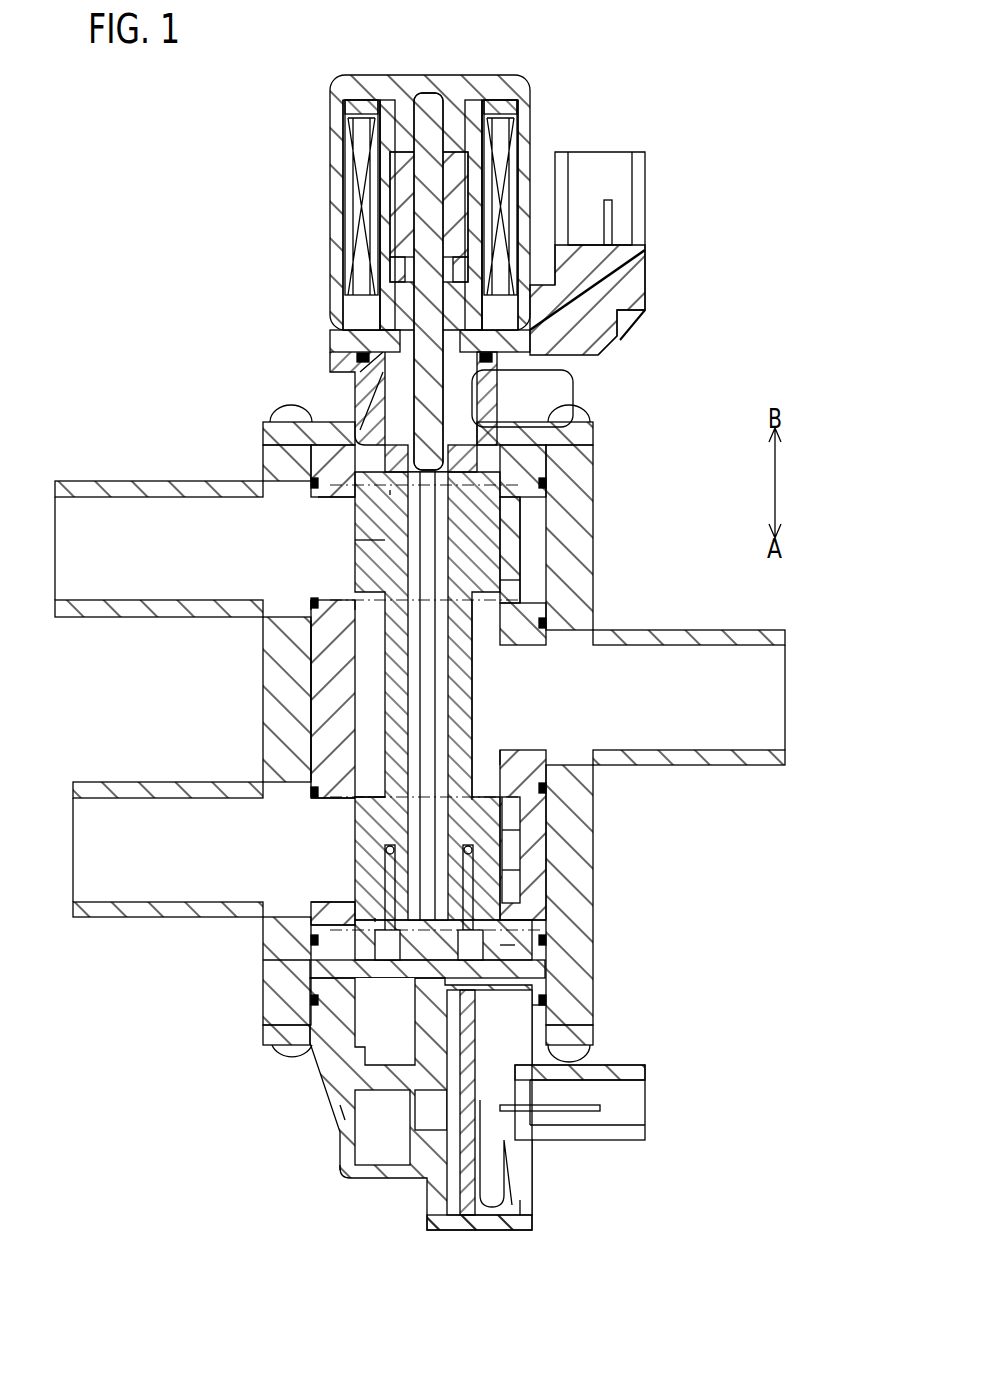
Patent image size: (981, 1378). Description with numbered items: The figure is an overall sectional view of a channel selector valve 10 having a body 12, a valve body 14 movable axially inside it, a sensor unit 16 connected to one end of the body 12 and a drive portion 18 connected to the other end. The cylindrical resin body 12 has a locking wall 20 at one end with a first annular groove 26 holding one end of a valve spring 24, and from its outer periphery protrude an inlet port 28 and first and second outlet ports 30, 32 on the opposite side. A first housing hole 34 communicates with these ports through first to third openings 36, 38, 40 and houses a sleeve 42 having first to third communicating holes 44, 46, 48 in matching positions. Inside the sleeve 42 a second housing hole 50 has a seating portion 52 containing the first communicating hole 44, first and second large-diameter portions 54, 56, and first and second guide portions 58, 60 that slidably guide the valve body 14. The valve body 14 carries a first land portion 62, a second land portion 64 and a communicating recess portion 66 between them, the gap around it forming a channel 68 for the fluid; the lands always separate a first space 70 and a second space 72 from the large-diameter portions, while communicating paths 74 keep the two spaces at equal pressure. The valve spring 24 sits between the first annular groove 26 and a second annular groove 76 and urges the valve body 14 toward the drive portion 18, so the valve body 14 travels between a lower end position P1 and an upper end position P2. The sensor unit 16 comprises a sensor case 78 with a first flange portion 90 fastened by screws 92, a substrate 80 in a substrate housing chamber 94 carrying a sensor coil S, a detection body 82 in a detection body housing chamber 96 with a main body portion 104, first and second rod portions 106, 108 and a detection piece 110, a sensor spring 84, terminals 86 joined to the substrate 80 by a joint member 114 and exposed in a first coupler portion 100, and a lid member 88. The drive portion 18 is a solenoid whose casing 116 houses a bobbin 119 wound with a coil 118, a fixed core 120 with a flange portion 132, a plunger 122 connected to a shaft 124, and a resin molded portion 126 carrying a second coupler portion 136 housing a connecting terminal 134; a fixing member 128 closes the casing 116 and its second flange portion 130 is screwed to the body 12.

The channel selector valve 10 is at (158, 145).
The body 12 is at (607, 493).
The valve body 14 is at (490, 695).
The sensor unit 16 is at (303, 1108).
The drive portion 18 is at (325, 195).
The locking wall 20 is at (365, 982).
The valve spring 24 is at (522, 830).
The first annular groove 26 is at (330, 960).
The inlet port 28 is at (745, 705).
The first outlet port 30 is at (105, 848).
The second outlet port 32 is at (90, 545).
The first housing hole 34 is at (525, 590).
The first opening 36 is at (545, 628).
The second opening 38 is at (315, 800).
The third opening 40 is at (310, 596).
The sleeve 42 is at (310, 685).
The first communicating hole 44 is at (520, 750).
The second communicating hole 46 is at (325, 900).
The third communicating hole 48 is at (318, 500).
The second housing hole 50 is at (365, 600).
The seating portion 52 is at (500, 752).
The first large-diameter portion 54 is at (522, 870).
The second large-diameter portion 56 is at (525, 515).
The first guide portion 58 is at (510, 920).
The second guide portion 60 is at (505, 470).
The first land portion 62 is at (385, 815).
The second land portion 64 is at (380, 540).
The communicating recess portion 66 is at (495, 625).
The channel 68 is at (520, 580).
The first space 70 is at (310, 925).
The second space 72 is at (355, 385).
The communicating paths 74 is at (440, 482).
The second annular groove 76 is at (385, 880).
The sensor case 78 is at (345, 1165).
The substrate 80 is at (540, 970).
The detection body 82 is at (345, 1112).
The sensor spring 84 is at (458, 1130).
The terminals 86 is at (602, 1108).
The lid member 88 is at (450, 1230).
The first flange portion 90 is at (597, 1038).
The screws 92 is at (585, 413).
The substrate housing chamber 94 is at (500, 1215).
The detection body housing chamber 96 is at (370, 1160).
The first coupler portion 100 is at (620, 1142).
The main body portion 104 is at (400, 1062).
The first rod portion 106 is at (425, 1110).
The second rod portion 108 is at (515, 945).
The detection piece 110 is at (600, 1082).
The joint member 114 is at (522, 1205).
The casing 116 is at (518, 80).
The coil 118 is at (360, 160).
The bobbin 119 is at (455, 115).
The fixed core 120 is at (380, 262).
The plunger 122 is at (500, 165).
The shaft 124 is at (545, 345).
The resin molded portion 126 is at (620, 340).
The fixing member 128 is at (365, 400).
The second flange portion 130 is at (595, 434).
The flange portion 132 is at (335, 345).
The connecting terminal 134 is at (608, 200).
The second coupler portion 136 is at (648, 236).
The lower end position P1 is at (375, 918).
The upper end position P2 is at (390, 490).
The sensor coil S is at (545, 1010).